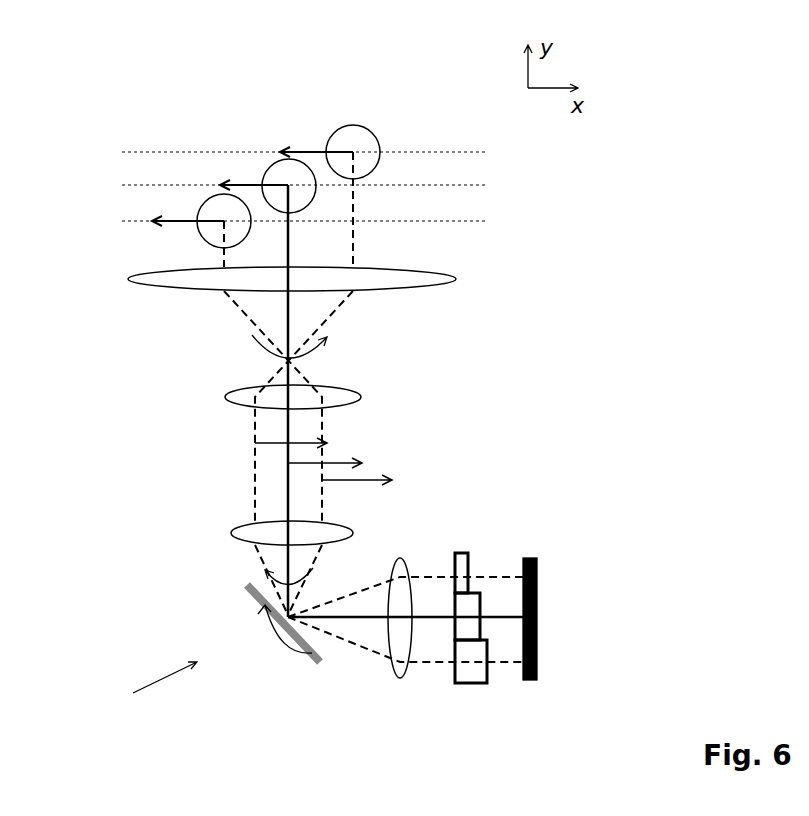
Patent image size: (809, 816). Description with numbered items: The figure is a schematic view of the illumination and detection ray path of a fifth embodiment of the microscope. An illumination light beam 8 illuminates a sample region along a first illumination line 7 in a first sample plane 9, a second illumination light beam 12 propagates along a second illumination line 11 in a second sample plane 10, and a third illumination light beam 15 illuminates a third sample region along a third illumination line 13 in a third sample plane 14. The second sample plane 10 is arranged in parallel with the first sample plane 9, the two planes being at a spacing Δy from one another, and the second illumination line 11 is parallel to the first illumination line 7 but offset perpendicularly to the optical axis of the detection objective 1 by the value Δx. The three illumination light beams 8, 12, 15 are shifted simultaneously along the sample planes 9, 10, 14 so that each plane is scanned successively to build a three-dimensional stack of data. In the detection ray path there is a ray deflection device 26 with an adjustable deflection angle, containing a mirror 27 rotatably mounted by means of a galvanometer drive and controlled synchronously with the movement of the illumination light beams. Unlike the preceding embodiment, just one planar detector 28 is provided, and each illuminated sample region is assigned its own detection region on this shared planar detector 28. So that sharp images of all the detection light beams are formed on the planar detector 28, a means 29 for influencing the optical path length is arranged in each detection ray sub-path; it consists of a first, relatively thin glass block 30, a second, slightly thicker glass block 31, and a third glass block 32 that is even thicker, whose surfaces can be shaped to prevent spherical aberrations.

The detection objective 1 is at (449, 304).
The first illumination line 7 is at (377, 150).
The illumination light beam 8 is at (352, 137).
The first sample plane 9 is at (470, 150).
The second sample plane 10 is at (468, 187).
The second illumination line 11 is at (283, 185).
The second illumination light beam 12 is at (277, 170).
The third illumination line 13 is at (222, 220).
The third sample plane 14 is at (466, 222).
The third illumination light beam 15 is at (210, 205).
The ray deflection device 26 is at (147, 693).
The mirror 27 is at (323, 658).
The planar detector 28 is at (537, 617).
The means for influencing the optical path length 29 is at (462, 638).
The first glass block 30 is at (463, 568).
The second glass block 31 is at (467, 613).
The third glass block 32 is at (477, 672).